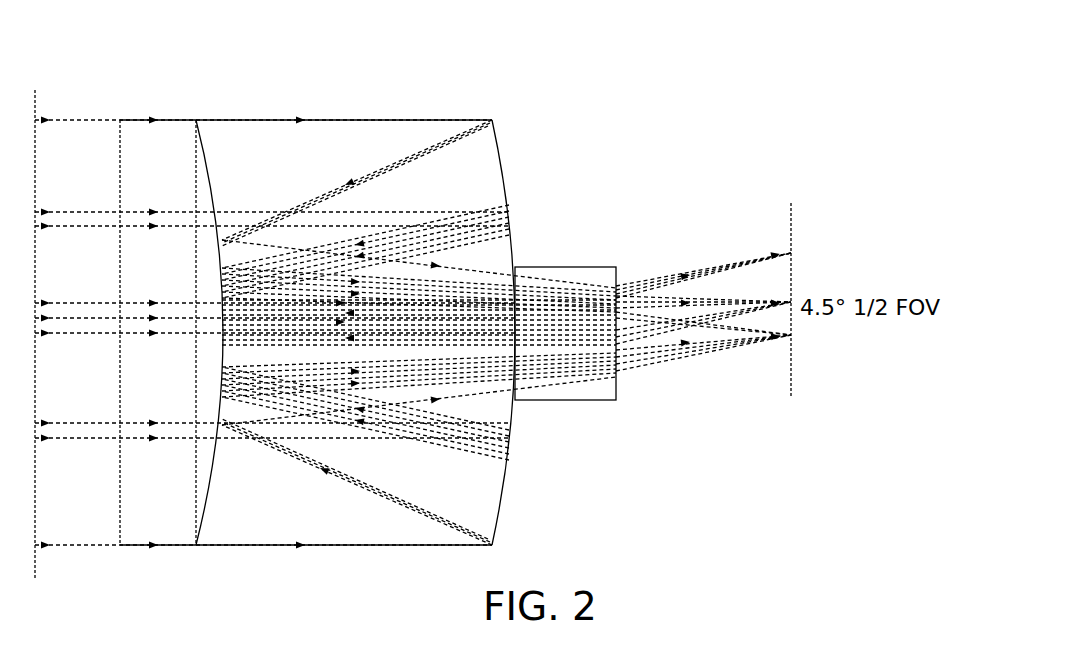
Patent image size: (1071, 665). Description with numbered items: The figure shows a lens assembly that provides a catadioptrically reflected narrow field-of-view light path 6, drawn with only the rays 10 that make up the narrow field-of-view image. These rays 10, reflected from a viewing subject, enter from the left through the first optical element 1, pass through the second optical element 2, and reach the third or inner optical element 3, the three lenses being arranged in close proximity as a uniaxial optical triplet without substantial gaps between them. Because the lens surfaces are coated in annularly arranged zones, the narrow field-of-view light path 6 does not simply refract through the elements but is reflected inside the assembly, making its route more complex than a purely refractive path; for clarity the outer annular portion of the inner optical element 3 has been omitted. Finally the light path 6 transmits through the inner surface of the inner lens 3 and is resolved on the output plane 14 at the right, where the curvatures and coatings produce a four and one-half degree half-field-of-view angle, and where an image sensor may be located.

The light rays 10 is at (80, 98).
The first optical element 1 is at (170, 546).
The second optical element 2 is at (353, 546).
The third optical element 3 is at (562, 400).
The narrow field-of-view light path 6 is at (390, 163).
The output plane 14 is at (791, 182).